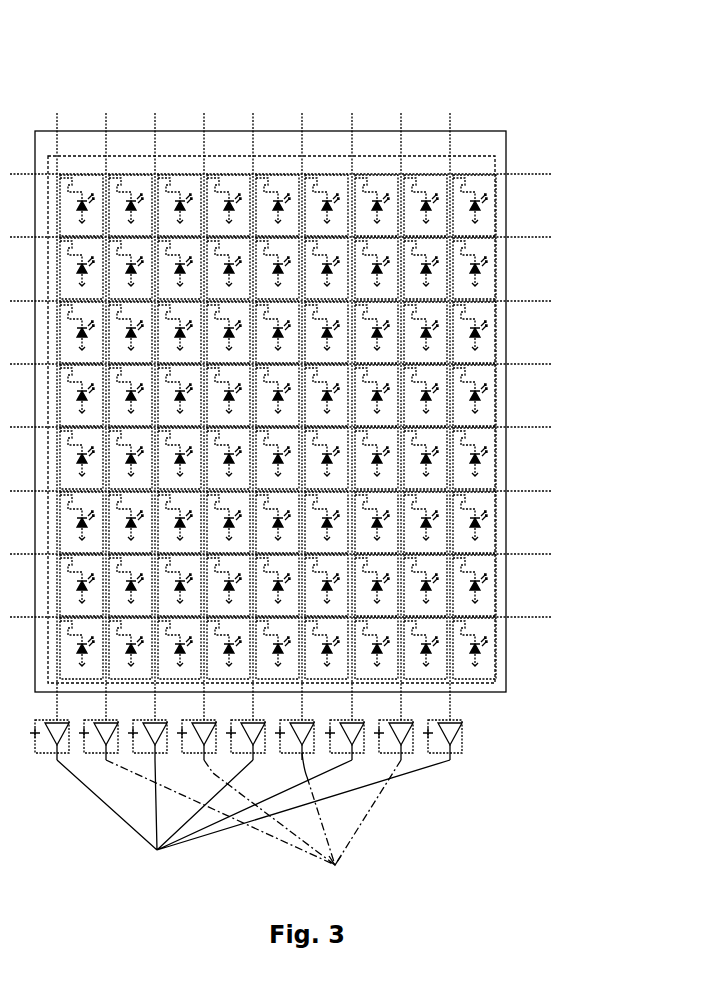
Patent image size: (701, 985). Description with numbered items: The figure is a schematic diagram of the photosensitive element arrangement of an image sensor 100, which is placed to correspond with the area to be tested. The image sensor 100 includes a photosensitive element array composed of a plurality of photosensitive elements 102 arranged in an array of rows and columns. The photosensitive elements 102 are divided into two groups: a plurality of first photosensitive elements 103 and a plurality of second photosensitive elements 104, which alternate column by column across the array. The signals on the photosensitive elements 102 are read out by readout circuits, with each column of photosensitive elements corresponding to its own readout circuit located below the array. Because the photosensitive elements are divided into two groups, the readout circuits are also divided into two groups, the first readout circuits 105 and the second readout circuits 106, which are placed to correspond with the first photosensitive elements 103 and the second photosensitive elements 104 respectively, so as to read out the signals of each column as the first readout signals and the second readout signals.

The image sensor 100 is at (510, 158).
The photosensitive element 102 is at (286, 348).
The first photosensitive element 103 is at (472, 155).
The second photosensitive element 104 is at (423, 157).
The first readout circuit 105 is at (246, 803).
The second readout circuit 106 is at (246, 805).